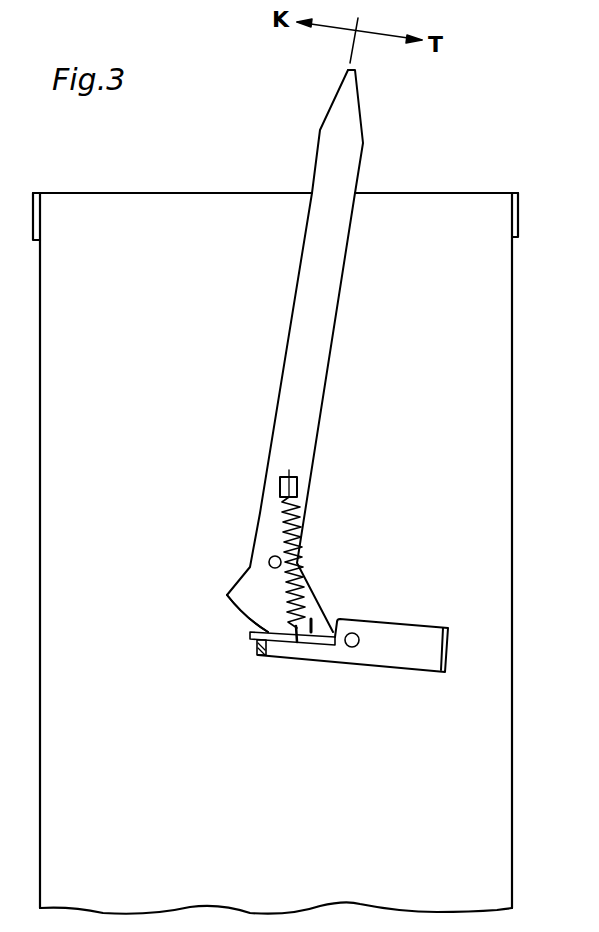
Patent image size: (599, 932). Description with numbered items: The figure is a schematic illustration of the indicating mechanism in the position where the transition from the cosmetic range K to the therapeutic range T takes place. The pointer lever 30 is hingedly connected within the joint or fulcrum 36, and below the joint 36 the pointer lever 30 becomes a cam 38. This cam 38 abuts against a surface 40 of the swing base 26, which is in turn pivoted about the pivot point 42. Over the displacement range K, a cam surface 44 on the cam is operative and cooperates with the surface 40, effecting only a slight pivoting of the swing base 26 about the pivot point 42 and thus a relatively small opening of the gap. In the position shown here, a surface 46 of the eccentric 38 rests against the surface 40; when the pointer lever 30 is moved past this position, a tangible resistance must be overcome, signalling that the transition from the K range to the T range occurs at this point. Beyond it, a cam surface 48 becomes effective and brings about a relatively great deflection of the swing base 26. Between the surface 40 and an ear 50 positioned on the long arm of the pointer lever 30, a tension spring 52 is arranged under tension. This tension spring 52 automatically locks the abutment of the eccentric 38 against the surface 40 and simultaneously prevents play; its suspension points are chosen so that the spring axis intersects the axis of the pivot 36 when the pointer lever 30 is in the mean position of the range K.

The swing base 26 is at (420, 638).
The pointer lever 30 is at (313, 410).
The joint 36 is at (269, 560).
The cam 38 is at (250, 603).
The surface 40 is at (257, 657).
The pivot point 42 is at (356, 647).
The cam surface 44 is at (238, 620).
The surface 46 is at (312, 628).
The cam surface 48 is at (330, 623).
The ear 50 is at (297, 477).
The tension spring 52 is at (310, 517).